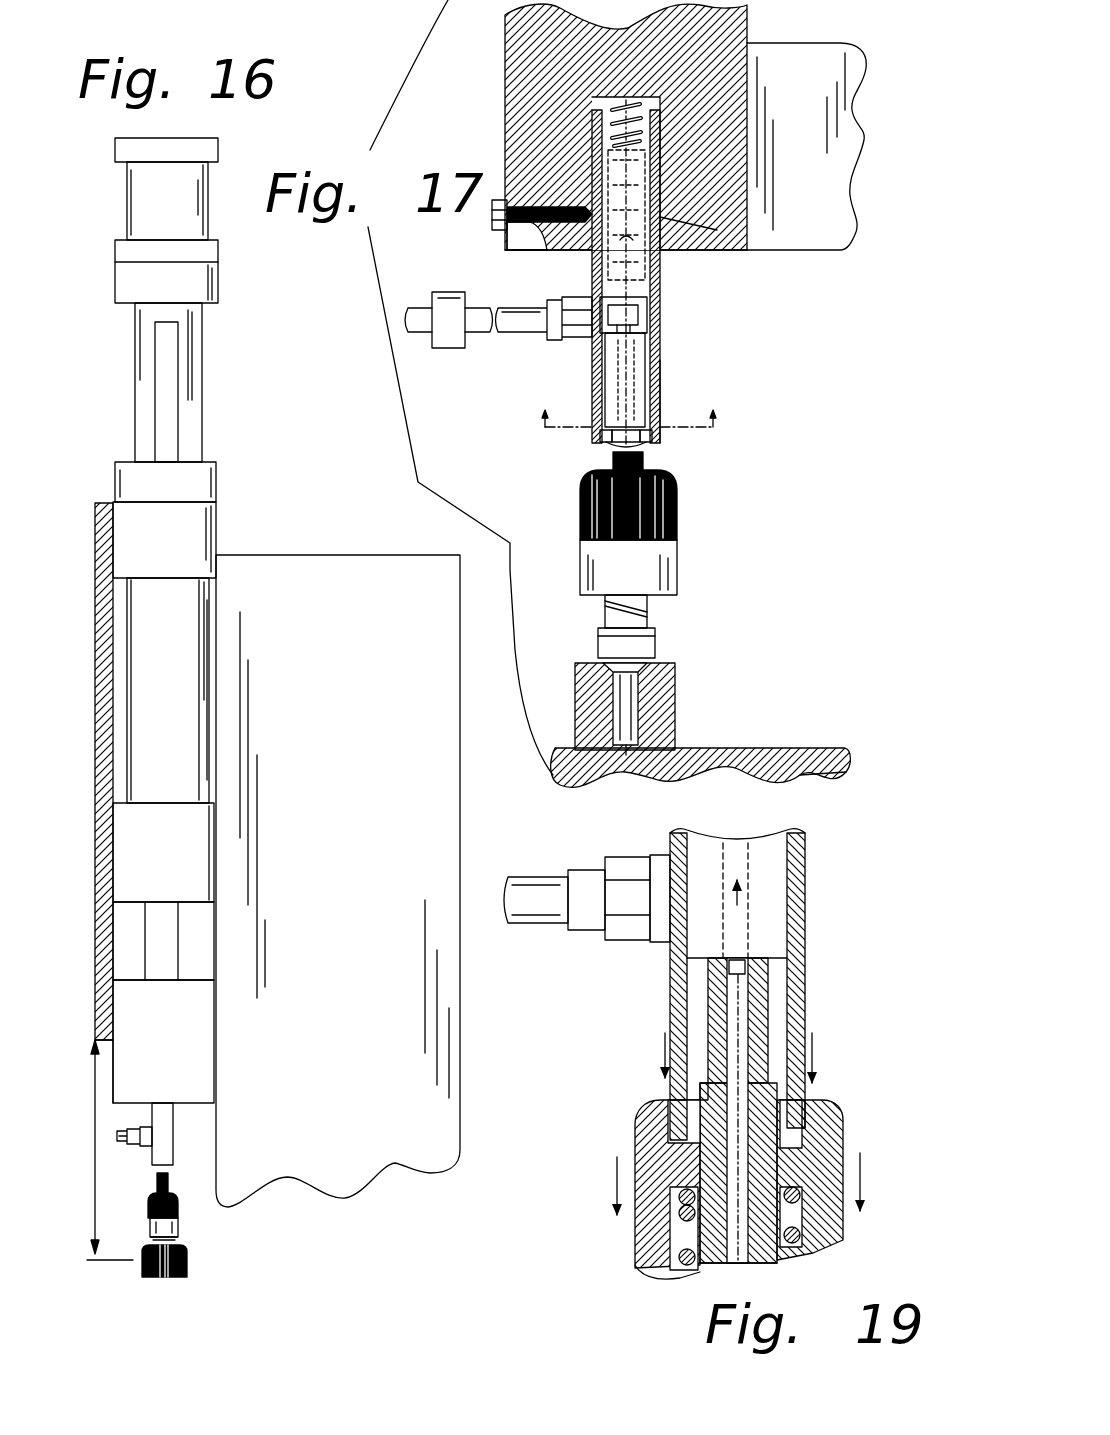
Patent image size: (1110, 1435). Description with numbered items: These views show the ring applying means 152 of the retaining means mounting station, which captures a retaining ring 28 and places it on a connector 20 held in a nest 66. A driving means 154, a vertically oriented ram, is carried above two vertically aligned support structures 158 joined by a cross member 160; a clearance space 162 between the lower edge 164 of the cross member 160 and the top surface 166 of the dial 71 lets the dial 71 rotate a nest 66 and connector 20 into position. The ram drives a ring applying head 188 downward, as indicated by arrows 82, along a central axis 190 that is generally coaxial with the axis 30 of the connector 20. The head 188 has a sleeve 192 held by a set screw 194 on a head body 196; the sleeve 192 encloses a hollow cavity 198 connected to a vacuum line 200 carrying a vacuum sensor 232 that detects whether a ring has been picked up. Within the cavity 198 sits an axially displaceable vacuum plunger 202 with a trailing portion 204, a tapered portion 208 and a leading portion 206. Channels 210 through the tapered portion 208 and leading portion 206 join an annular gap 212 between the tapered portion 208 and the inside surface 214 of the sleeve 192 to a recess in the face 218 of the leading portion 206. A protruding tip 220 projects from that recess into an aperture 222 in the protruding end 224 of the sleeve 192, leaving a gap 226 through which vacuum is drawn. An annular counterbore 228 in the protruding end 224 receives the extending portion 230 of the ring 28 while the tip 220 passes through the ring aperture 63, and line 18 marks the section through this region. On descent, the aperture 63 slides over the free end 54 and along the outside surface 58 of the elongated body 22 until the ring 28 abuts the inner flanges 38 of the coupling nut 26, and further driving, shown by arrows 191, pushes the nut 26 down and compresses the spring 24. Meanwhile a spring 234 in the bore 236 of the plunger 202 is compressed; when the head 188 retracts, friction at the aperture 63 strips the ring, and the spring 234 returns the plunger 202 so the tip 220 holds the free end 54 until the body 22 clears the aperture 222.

In FIG. 17, the section line 18 is at (631, 421).
In FIG. 16, the connector 20 is at (190, 1226).
In FIG. 17, the connector 20 is at (692, 525).
In FIG. 17, the elongated body 22 is at (602, 605).
In FIG. 19, the elongated body 22 is at (703, 1038).
In FIG. 17, the spring 24 is at (660, 612).
In FIG. 19, the spring 24 is at (682, 1268).
In FIG. 17, the coupling nut 26 is at (585, 510).
In FIG. 19, the coupling nut 26 is at (628, 1236).
In FIG. 17, the retaining ring 28 is at (449, 503).
In FIG. 19, the retaining ring 28 is at (812, 1142).
In FIG. 19, the axis 30 is at (740, 1268).
In FIG. 19, the inner flanges 38 is at (800, 1170).
In FIG. 19, the free end 54 is at (783, 966).
In FIG. 19, the outside surface 58 is at (703, 1083).
In FIG. 19, the aperture 63 is at (665, 1095).
In FIG. 16, the nest 66 is at (182, 1272).
In FIG. 17, the nest 66 is at (680, 735).
In FIG. 17, the dial 71 is at (812, 782).
In FIG. 19, the arrows 82 is at (812, 1040).
In FIG. 16, the ring applying means 152 is at (231, 379).
In FIG. 16, the driving means 154 is at (112, 478).
In FIG. 16, the support structures 158 is at (250, 567).
In FIG. 17, the support structures 158 is at (760, 43).
In FIG. 16, the cross member 160 is at (92, 698).
In FIG. 16, the clearance space 162 is at (94, 1248).
In FIG. 16, the lower edge 164 is at (106, 1043).
In FIG. 17, the top surface 166 is at (752, 760).
In FIG. 16, the ring applying head 188 is at (108, 1170).
In FIG. 17, the ring applying head 188 is at (410, 272).
In FIG. 17, the central axis 190 is at (613, 233).
In FIG. 19, the central axis 190 is at (737, 1022).
In FIG. 19, the arrows 191 is at (614, 1172).
In FIG. 16, the sleeve 192 is at (173, 1163).
In FIG. 17, the sleeve 192 is at (662, 385).
In FIG. 17, the set screw 194 is at (490, 220).
In FIG. 16, the head body 196 is at (122, 1080).
In FIG. 17, the head body 196 is at (520, 243).
In FIG. 17, the hollow cavity 198 is at (622, 146).
In FIG. 16, the vacuum line 200 is at (128, 1140).
In FIG. 17, the vacuum line 200 is at (512, 332).
In FIG. 19, the vacuum line 200 is at (587, 898).
In FIG. 17, the vacuum plunger 202 is at (594, 372).
In FIG. 17, the trailing portion 204 is at (650, 203).
In FIG. 17, the leading portion 206 is at (645, 355).
In FIG. 17, the tapered portion 208 is at (632, 305).
In FIG. 17, the channels 210 is at (652, 322).
In FIG. 17, the annular gap 212 is at (646, 312).
In FIG. 17, the inside surface 214 is at (594, 312).
In FIG. 17, the face 218 is at (612, 455).
In FIG. 17, the protruding tip 220 is at (650, 455).
In FIG. 17, the aperture 222 is at (603, 440).
In FIG. 17, the protruding end 224 is at (652, 440).
In FIG. 17, the gap 226 is at (640, 450).
In FIG. 19, the annular counterbore 228 is at (790, 1132).
In FIG. 19, the extending portion 230 is at (687, 1150).
In FIG. 17, the vacuum sensor 232 is at (445, 348).
In FIG. 17, the spring 234 is at (605, 103).
In FIG. 17, the bore 236 is at (635, 247).